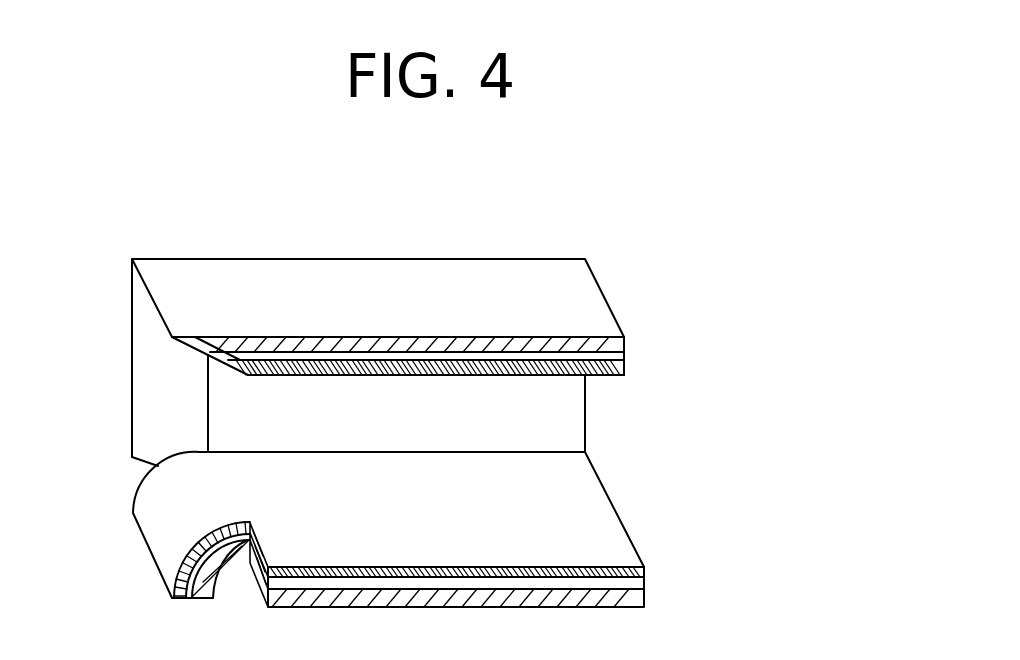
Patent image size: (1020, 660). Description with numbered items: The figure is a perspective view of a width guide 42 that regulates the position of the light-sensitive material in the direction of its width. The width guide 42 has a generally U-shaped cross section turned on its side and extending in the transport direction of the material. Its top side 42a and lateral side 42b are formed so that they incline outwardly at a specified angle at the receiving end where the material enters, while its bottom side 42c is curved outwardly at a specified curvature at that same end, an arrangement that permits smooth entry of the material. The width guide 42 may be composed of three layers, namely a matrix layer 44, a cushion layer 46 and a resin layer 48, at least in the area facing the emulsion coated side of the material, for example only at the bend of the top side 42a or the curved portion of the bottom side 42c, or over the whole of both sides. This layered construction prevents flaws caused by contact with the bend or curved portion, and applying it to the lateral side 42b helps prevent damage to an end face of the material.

The width guide 42 is at (644, 250).
The top side 42a is at (383, 284).
The lateral side 42b is at (568, 420).
The bottom side 42c is at (598, 517).
The matrix layer 44 is at (624, 340).
The cushion layer 46 is at (625, 356).
The resin layer 48 is at (625, 367).